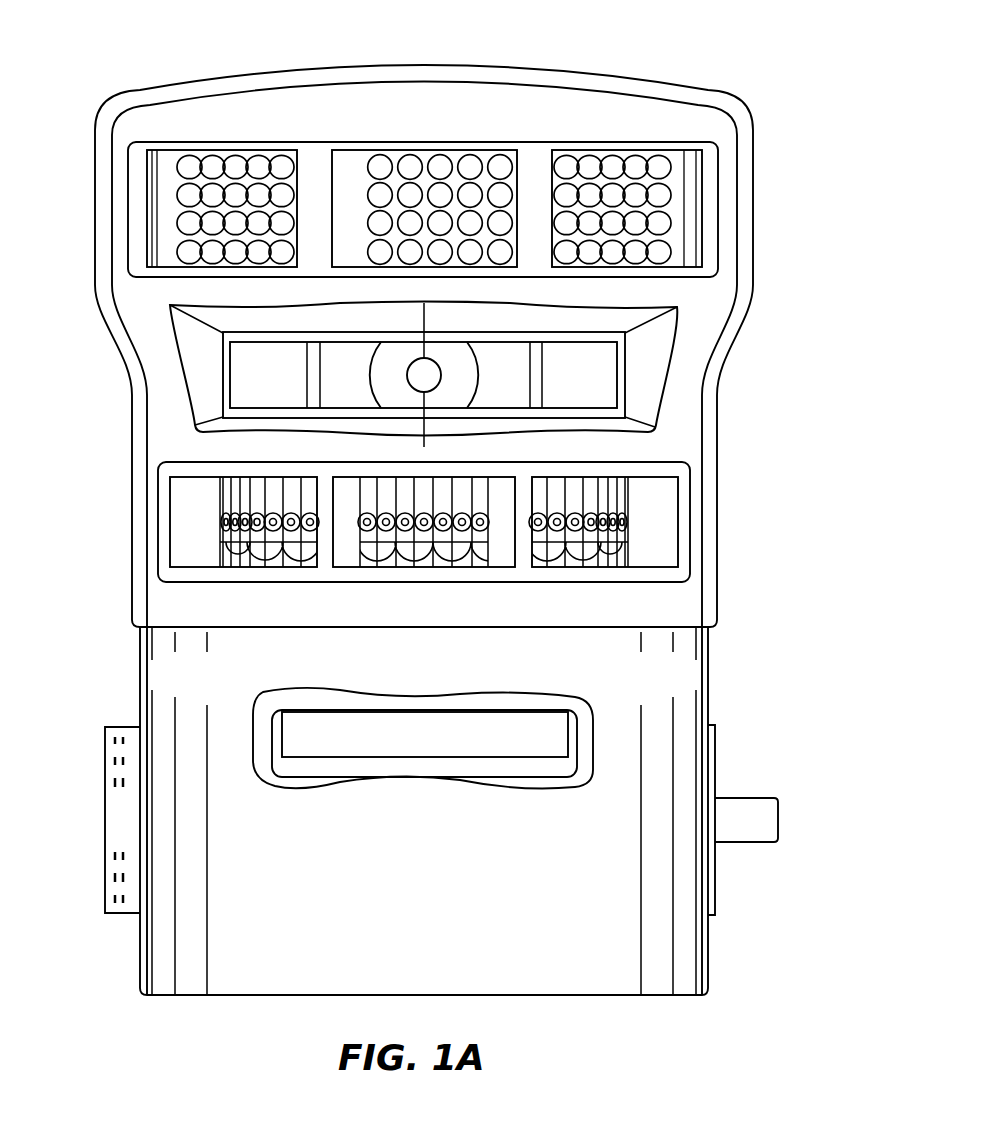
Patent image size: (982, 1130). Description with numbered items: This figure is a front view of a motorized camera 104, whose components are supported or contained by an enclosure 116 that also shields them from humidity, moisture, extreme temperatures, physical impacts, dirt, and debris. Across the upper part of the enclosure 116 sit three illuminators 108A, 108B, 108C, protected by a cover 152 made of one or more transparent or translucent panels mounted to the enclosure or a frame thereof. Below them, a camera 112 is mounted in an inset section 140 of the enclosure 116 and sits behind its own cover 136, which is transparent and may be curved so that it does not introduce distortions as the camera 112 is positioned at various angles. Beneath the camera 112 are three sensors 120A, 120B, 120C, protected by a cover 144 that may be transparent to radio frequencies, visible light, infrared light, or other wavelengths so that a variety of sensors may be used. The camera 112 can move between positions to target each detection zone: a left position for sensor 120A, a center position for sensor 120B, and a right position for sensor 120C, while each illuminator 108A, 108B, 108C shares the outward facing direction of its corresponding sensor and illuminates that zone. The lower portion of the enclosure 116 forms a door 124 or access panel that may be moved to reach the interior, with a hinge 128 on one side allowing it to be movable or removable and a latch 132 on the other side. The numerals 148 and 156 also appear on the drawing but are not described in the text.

The motorized camera 104 is at (800, 218).
The illuminator 108A is at (192, 158).
The illuminator 108B is at (384, 158).
The illuminator 108C is at (595, 158).
The camera 112 is at (480, 362).
The enclosure 116 is at (720, 453).
The sensor 120A is at (260, 565).
The sensor 120B is at (425, 563).
The sensor 120C is at (568, 563).
The door 124 is at (685, 648).
The hinge 128 is at (118, 915).
The latch 132 is at (763, 800).
The cover 136 is at (242, 390).
The inset section 140 is at (190, 353).
The cover 144 is at (158, 497).
The indicator window 148 is at (178, 542).
The cover 152 is at (136, 220).
The strap slot 156 is at (552, 737).